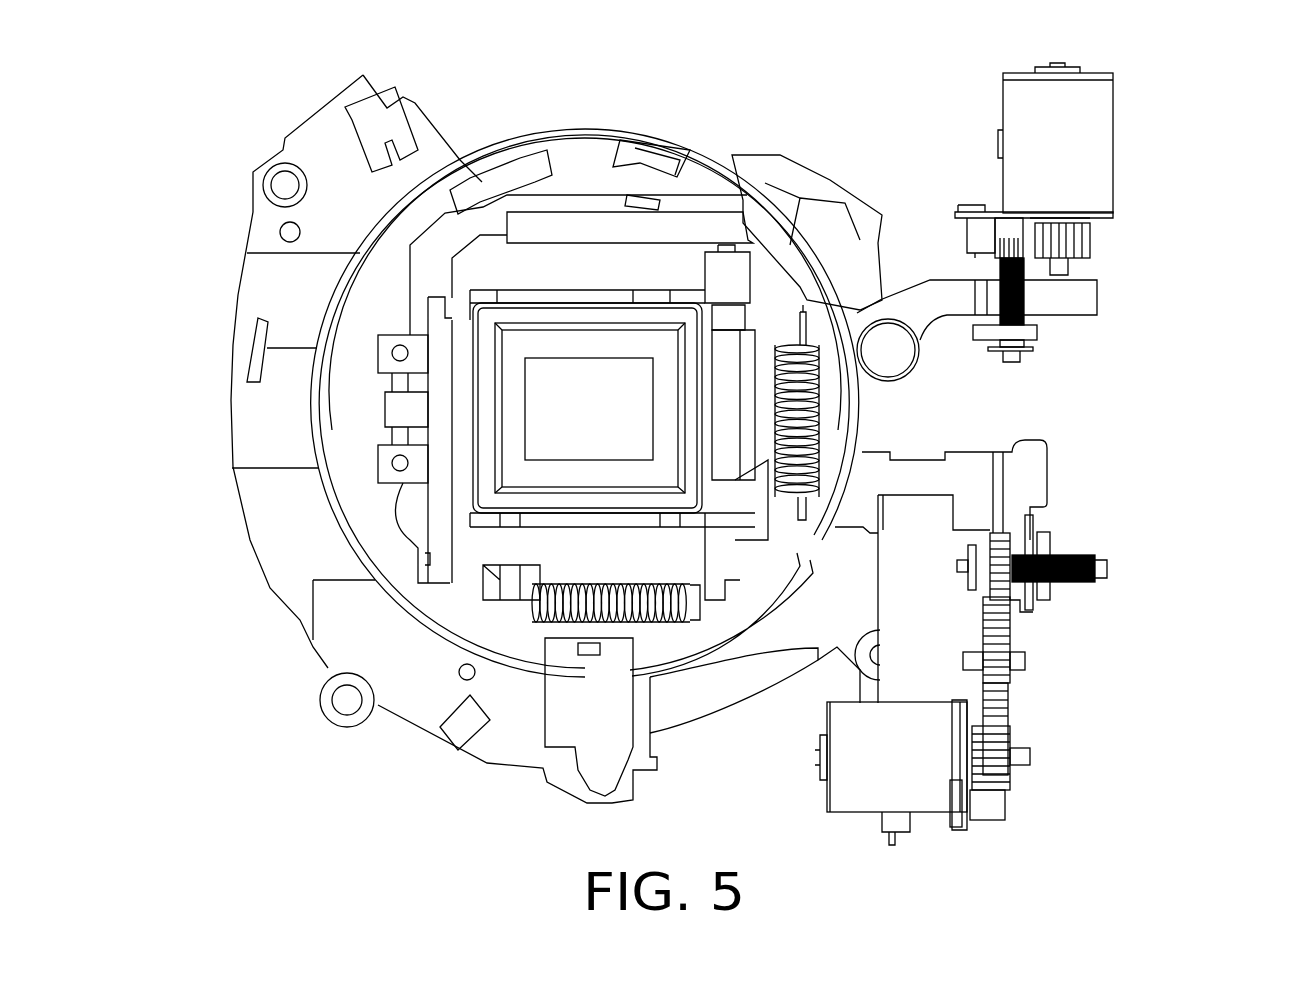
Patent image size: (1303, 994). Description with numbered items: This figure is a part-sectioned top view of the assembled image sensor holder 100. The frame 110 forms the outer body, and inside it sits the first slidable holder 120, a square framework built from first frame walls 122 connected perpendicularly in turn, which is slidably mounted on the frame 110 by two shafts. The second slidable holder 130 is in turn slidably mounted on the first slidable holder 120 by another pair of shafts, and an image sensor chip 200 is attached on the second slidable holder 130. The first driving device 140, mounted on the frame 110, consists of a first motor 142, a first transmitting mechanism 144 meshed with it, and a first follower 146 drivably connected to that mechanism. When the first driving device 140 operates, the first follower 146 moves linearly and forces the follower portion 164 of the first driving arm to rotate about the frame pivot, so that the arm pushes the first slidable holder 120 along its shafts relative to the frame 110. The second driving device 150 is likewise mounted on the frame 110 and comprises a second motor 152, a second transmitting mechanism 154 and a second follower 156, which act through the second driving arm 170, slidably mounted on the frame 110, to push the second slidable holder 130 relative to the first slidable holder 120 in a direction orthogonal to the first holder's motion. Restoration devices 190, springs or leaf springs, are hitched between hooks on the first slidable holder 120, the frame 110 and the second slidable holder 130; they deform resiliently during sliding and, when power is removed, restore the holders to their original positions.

The image sensor holder 100 is at (458, 43).
The frame 110 is at (288, 295).
The first slidable holder 120 is at (440, 408).
The first frame walls 122 is at (578, 545).
The second slidable holder 130 is at (540, 315).
The first driving device 140 is at (1222, 110).
The first motor 142 is at (1093, 140).
The first transmitting mechanism 144 is at (1073, 242).
The first follower 146 is at (1040, 330).
The second driving device 150 is at (1182, 607).
The second motor 152 is at (935, 775).
The second transmitting mechanism 154 is at (1003, 685).
The second follower 156 is at (1043, 593).
The follower portion 164 is at (935, 295).
The second driving arm 170 is at (962, 470).
The restoration device 190 is at (800, 322).
The image sensor chip 200 is at (560, 420).